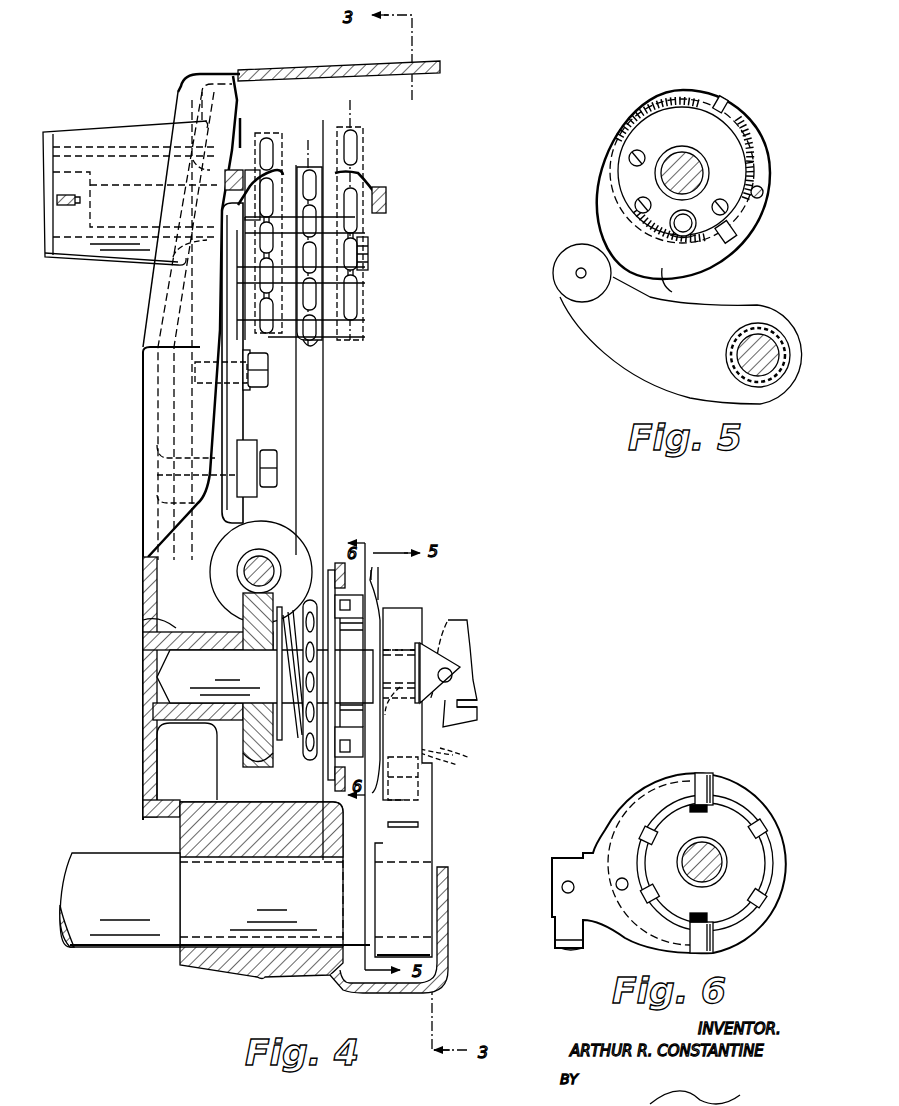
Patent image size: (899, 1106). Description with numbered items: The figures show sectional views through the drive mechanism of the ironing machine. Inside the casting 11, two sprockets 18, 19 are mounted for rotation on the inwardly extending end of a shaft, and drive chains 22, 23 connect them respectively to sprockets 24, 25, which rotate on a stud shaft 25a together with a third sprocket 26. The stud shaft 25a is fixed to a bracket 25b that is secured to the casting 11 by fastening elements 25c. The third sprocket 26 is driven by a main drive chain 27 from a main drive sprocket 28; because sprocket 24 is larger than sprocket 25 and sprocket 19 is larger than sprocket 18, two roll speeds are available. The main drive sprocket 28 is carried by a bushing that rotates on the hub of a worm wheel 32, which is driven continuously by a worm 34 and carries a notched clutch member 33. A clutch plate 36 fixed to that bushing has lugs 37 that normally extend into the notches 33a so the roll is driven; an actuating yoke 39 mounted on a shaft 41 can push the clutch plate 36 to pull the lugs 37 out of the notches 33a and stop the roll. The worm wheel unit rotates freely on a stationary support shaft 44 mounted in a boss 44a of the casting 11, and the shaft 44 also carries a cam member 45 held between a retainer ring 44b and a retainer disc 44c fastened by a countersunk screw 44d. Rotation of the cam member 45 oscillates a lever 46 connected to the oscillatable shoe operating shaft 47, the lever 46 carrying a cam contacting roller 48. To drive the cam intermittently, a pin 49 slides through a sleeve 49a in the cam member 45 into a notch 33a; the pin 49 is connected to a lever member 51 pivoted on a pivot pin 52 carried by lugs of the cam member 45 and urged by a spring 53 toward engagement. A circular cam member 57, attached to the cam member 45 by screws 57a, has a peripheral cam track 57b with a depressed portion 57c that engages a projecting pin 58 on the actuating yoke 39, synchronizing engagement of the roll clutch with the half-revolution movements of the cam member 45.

In FIG. 4, the casting 11 is at (255, 60).
In FIG. 4, the sprocket 18 is at (270, 152).
In FIG. 4, the sprocket 19 is at (352, 150).
In FIG. 4, the drive chain 22 is at (266, 138).
In FIG. 4, the drive chain 23 is at (355, 128).
In FIG. 4, the sprocket 24 is at (260, 323).
In FIG. 4, the sprocket 25 is at (352, 318).
In FIG. 4, the stud shaft 25a is at (368, 255).
In FIG. 4, the bracket 25b is at (232, 417).
In FIG. 4, the fastening elements 25c is at (258, 388).
In FIG. 4, the third sprocket 26 is at (312, 340).
In FIG. 4, the main drive chain 27 is at (313, 435).
In FIG. 4, the main drive sprocket 28 is at (310, 760).
In FIG. 4, the worm wheel 32 is at (262, 760).
In FIG. 6, the notched clutch member 33 is at (750, 860).
In FIG. 6, the notches 33a is at (650, 832).
In FIG. 4, the worm 34 is at (258, 563).
In FIG. 4, the clutch plate 36 is at (332, 563).
In FIG. 6, the clutch plate 36 is at (740, 802).
In FIG. 6, the lugs 37 is at (697, 775).
In FIG. 6, the actuating yoke 39 is at (633, 797).
In FIG. 6, the shaft 41 is at (562, 935).
In FIG. 4, the support shaft 44 is at (230, 683).
In FIG. 5, the support shaft 44 is at (690, 162).
In FIG. 6, the support shaft 44 is at (707, 853).
In FIG. 4, the boss 44a is at (162, 620).
In FIG. 4, the retainer ring 44b is at (363, 644).
In FIG. 4, the retainer disc 44c is at (450, 648).
In FIG. 4, the countersunk screw 44d is at (400, 718).
In FIG. 4, the cam member 45 is at (408, 618).
In FIG. 5, the cam member 45 is at (699, 260).
In FIG. 4, the lever 46 is at (427, 840).
In FIG. 5, the lever 46 is at (697, 318).
In FIG. 4, the shoe operating shaft 47 is at (92, 930).
In FIG. 5, the shoe operating shaft 47 is at (775, 340).
In FIG. 4, the cam contacting roller 48 is at (460, 756).
In FIG. 5, the cam contacting roller 48 is at (553, 270).
In FIG. 5, the pin 49 is at (675, 233).
In FIG. 5, the sleeve 49a is at (700, 235).
In FIG. 4, the lever member 51 is at (460, 630).
In FIG. 4, the pivot pin 52 is at (452, 675).
In FIG. 4, the spring 53 is at (477, 705).
In FIG. 4, the cam member 57 is at (380, 602).
In FIG. 5, the cam member 57 is at (648, 110).
In FIG. 5, the screws 57a is at (628, 155).
In FIG. 4, the cam track 57b is at (373, 562).
In FIG. 5, the cam track 57b is at (710, 104).
In FIG. 5, the depressed portion 57c is at (768, 172).
In FIG. 5, the projecting pin 58 is at (764, 190).
In FIG. 6, the projecting pin 58 is at (620, 890).